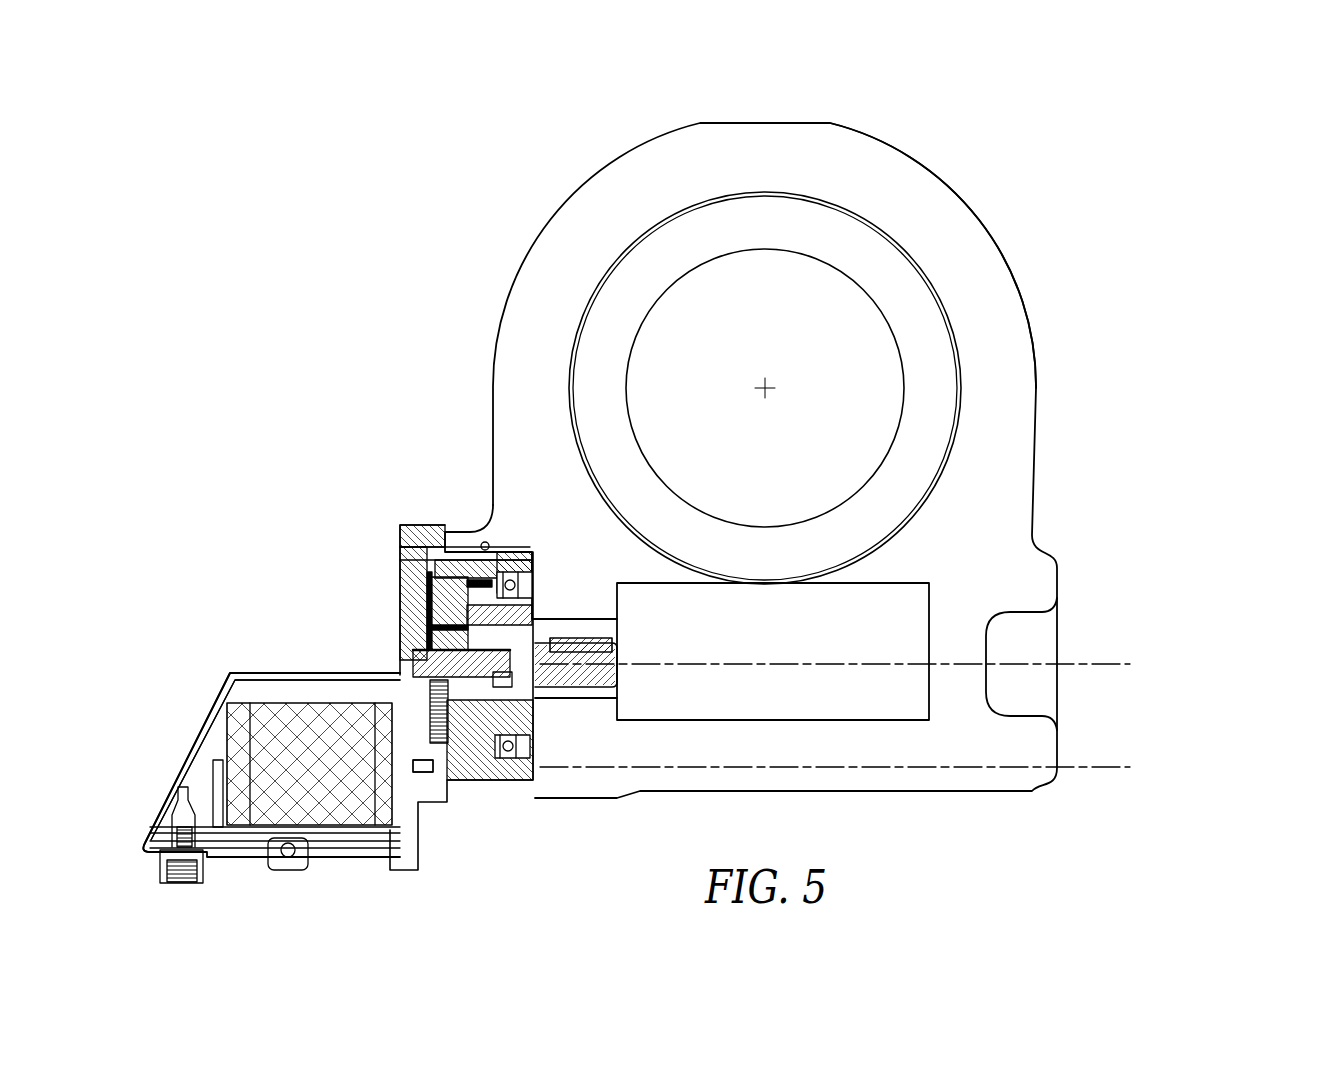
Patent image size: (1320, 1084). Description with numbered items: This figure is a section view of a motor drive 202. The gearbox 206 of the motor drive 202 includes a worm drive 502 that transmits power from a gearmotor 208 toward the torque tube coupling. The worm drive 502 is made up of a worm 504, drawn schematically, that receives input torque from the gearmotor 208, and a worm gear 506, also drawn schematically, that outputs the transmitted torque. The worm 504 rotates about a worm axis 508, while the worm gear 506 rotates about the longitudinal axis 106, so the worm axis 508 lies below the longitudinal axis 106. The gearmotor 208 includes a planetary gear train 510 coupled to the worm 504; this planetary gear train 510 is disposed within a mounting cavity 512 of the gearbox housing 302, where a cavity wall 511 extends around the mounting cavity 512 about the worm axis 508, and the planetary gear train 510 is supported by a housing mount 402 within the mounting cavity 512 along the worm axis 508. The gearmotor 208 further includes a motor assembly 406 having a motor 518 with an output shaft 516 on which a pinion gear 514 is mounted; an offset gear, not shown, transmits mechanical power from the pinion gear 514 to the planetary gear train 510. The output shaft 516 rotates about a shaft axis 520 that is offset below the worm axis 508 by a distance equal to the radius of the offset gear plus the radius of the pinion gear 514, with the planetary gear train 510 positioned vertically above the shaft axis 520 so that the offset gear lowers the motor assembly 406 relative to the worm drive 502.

The motor drive 202 is at (1170, 156).
The gearbox housing 302 is at (577, 188).
The longitudinal axis 106 is at (768, 387).
The gearbox 206 is at (1002, 240).
The worm gear 506 is at (953, 317).
The worm drive 502 is at (896, 575).
The worm 504 is at (930, 613).
The worm axis 508 is at (1117, 663).
The shaft axis 520 is at (1132, 766).
The cavity wall 511 is at (505, 555).
The mounting cavity 512 is at (445, 528).
The housing mount 402 is at (408, 532).
The gearmotor 208 is at (281, 665).
The motor assembly 406 is at (281, 665).
The motor 518 is at (307, 742).
The planetary gear train 510 is at (487, 752).
The pinion gear 514 is at (422, 780).
The output shaft 516 is at (422, 780).